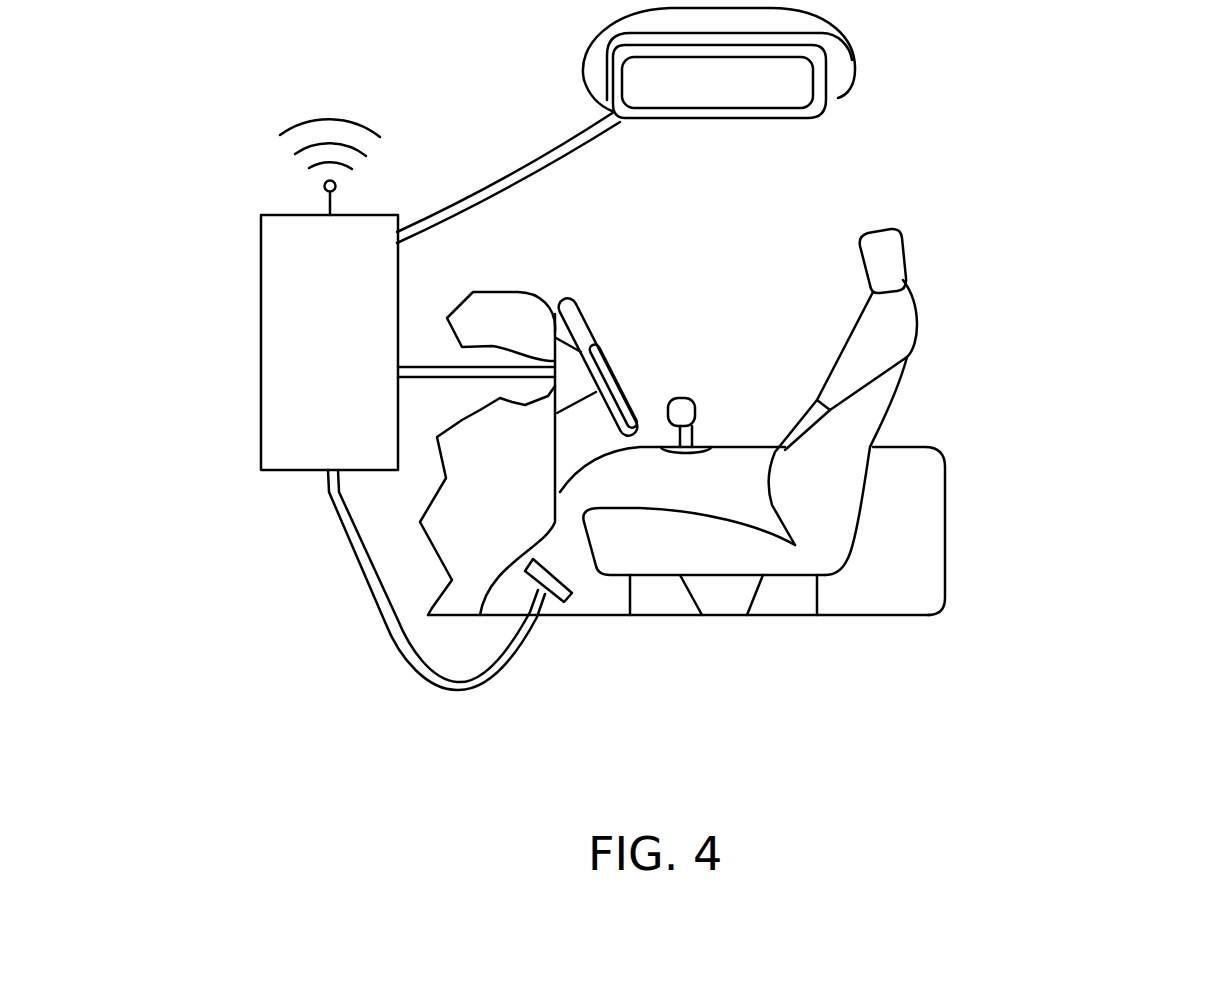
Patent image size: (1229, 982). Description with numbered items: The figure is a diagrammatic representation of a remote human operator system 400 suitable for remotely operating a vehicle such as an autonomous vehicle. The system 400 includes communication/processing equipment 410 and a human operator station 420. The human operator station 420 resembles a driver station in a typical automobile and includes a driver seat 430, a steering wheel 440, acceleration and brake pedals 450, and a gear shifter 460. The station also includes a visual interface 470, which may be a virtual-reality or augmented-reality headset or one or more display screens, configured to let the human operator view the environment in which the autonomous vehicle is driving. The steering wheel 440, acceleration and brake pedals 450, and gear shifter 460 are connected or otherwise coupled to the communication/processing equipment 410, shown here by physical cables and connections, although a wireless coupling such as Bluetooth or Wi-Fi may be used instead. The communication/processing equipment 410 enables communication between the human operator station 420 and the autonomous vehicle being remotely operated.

The system 400 is at (214, 58).
The communication/processing equipment 410 is at (262, 308).
The human operator station 420 is at (891, 399).
The driver seat 430 is at (903, 252).
The steering wheel 440 is at (590, 320).
The acceleration and brake pedals 450 is at (572, 600).
The gear shifter 460 is at (680, 398).
The visual interface 470 is at (856, 80).